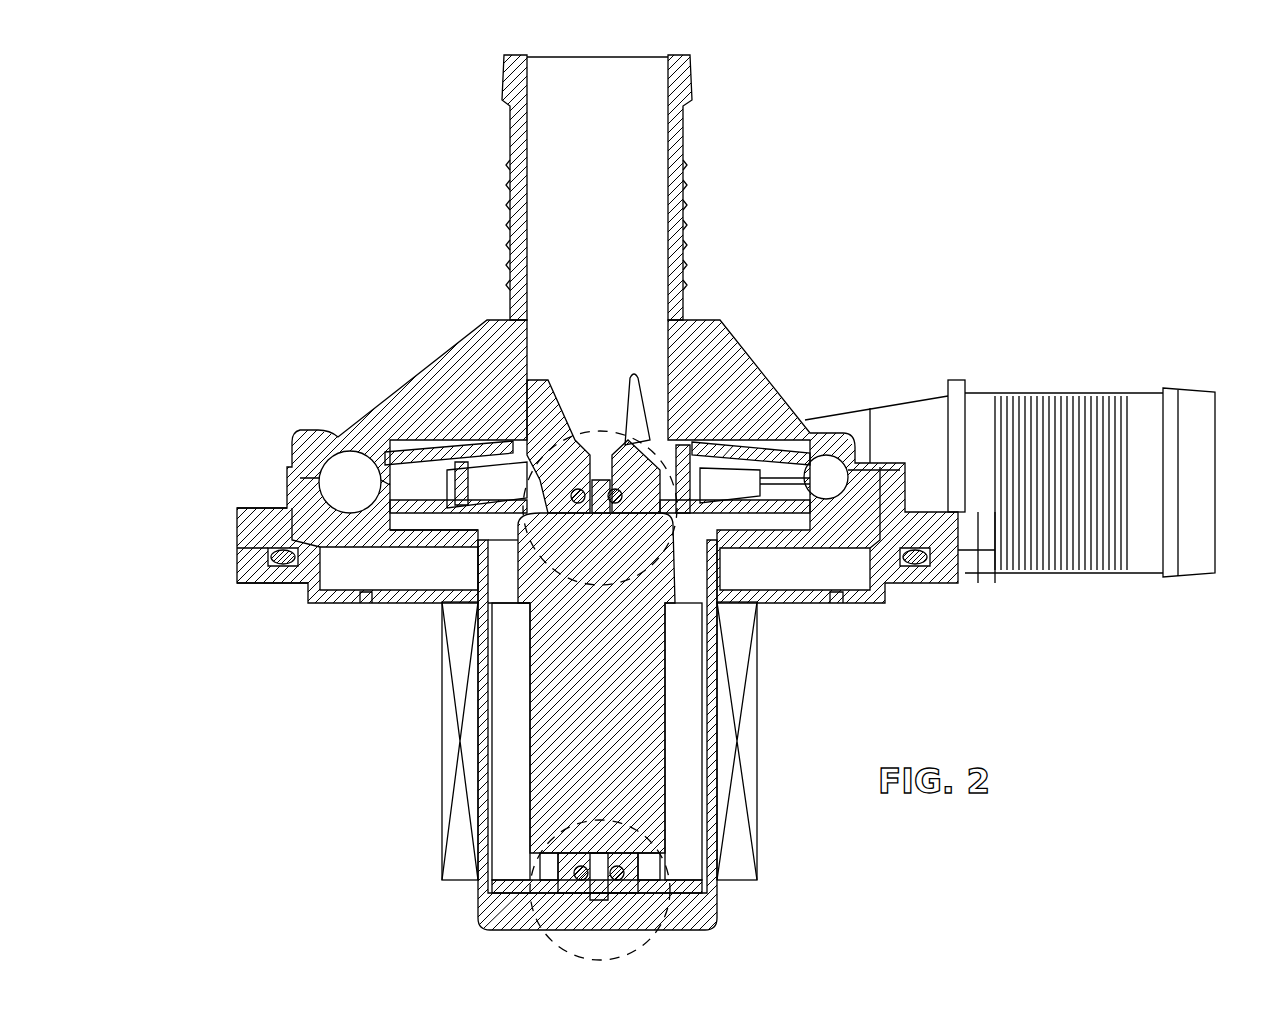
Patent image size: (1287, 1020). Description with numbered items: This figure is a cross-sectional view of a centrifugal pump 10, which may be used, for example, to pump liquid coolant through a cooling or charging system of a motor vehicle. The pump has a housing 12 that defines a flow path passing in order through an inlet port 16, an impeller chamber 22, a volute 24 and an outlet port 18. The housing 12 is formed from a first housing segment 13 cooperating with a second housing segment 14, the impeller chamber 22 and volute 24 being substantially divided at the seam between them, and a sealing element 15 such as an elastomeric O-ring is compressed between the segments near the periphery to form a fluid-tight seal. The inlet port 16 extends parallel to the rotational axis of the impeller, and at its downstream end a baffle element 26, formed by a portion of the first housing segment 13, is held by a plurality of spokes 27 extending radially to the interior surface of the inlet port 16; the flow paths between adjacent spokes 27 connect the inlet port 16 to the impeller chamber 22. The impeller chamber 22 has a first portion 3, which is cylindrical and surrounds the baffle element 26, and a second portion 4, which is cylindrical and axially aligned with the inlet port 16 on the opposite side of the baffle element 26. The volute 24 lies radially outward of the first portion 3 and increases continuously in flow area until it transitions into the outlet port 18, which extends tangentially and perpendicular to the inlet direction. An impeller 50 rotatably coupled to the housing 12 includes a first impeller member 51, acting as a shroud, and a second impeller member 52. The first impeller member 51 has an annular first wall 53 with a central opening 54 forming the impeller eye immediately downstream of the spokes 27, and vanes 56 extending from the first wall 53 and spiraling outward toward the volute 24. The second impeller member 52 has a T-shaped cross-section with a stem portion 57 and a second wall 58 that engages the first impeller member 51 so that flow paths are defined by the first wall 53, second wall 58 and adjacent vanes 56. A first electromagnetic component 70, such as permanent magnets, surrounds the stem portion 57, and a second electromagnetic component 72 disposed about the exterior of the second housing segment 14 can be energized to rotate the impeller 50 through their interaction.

The centrifugal pump 10 is at (852, 262).
The housing 12 is at (740, 358).
The first housing segment 13 is at (270, 508).
The second housing segment 14 is at (262, 590).
The sealing element 15 is at (262, 550).
The inlet port 16 is at (668, 126).
The outlet port 18 is at (1137, 392).
The impeller chamber 22 is at (760, 450).
The volute 24 is at (350, 465).
The baffle element 26 is at (632, 466).
The spokes 27 is at (663, 375).
The impeller 50 is at (683, 543).
The first impeller member 51 is at (515, 440).
The second impeller member 52 is at (527, 623).
The annular first wall 53 is at (487, 482).
The central opening 54 is at (542, 420).
The vanes 56 is at (472, 450).
The stem portion 57 is at (528, 580).
The second wall 58 is at (463, 512).
The first electromagnetic component 70 is at (690, 735).
The second electromagnetic component 72 is at (743, 767).
The first portion 3 is at (588, 430).
The second portion 4 is at (648, 930).